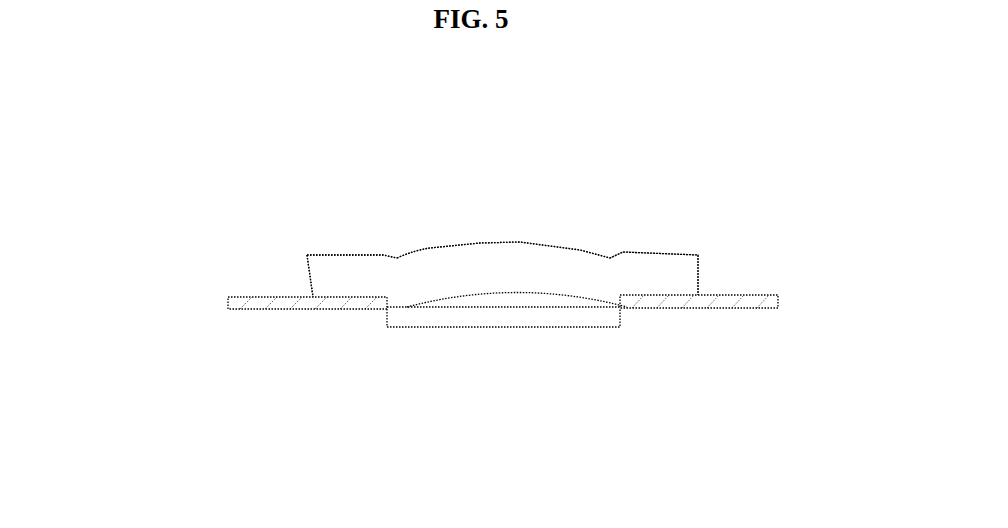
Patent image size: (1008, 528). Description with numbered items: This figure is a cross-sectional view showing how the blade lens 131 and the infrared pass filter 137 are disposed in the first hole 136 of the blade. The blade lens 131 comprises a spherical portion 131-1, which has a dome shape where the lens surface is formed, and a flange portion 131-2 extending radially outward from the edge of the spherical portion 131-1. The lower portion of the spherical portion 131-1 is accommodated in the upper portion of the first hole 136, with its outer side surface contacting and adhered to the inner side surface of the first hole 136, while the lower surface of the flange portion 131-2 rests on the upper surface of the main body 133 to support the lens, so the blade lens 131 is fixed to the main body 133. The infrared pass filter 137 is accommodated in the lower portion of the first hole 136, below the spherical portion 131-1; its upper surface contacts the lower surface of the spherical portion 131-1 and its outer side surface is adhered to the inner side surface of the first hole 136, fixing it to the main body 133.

The blade lens 131 is at (440, 209).
The spherical portion 131-1 is at (453, 253).
The flange portion 131-2 is at (360, 270).
The main body 133 is at (273, 303).
The first hole 136 is at (505, 298).
The infrared pass filter 137 is at (440, 313).